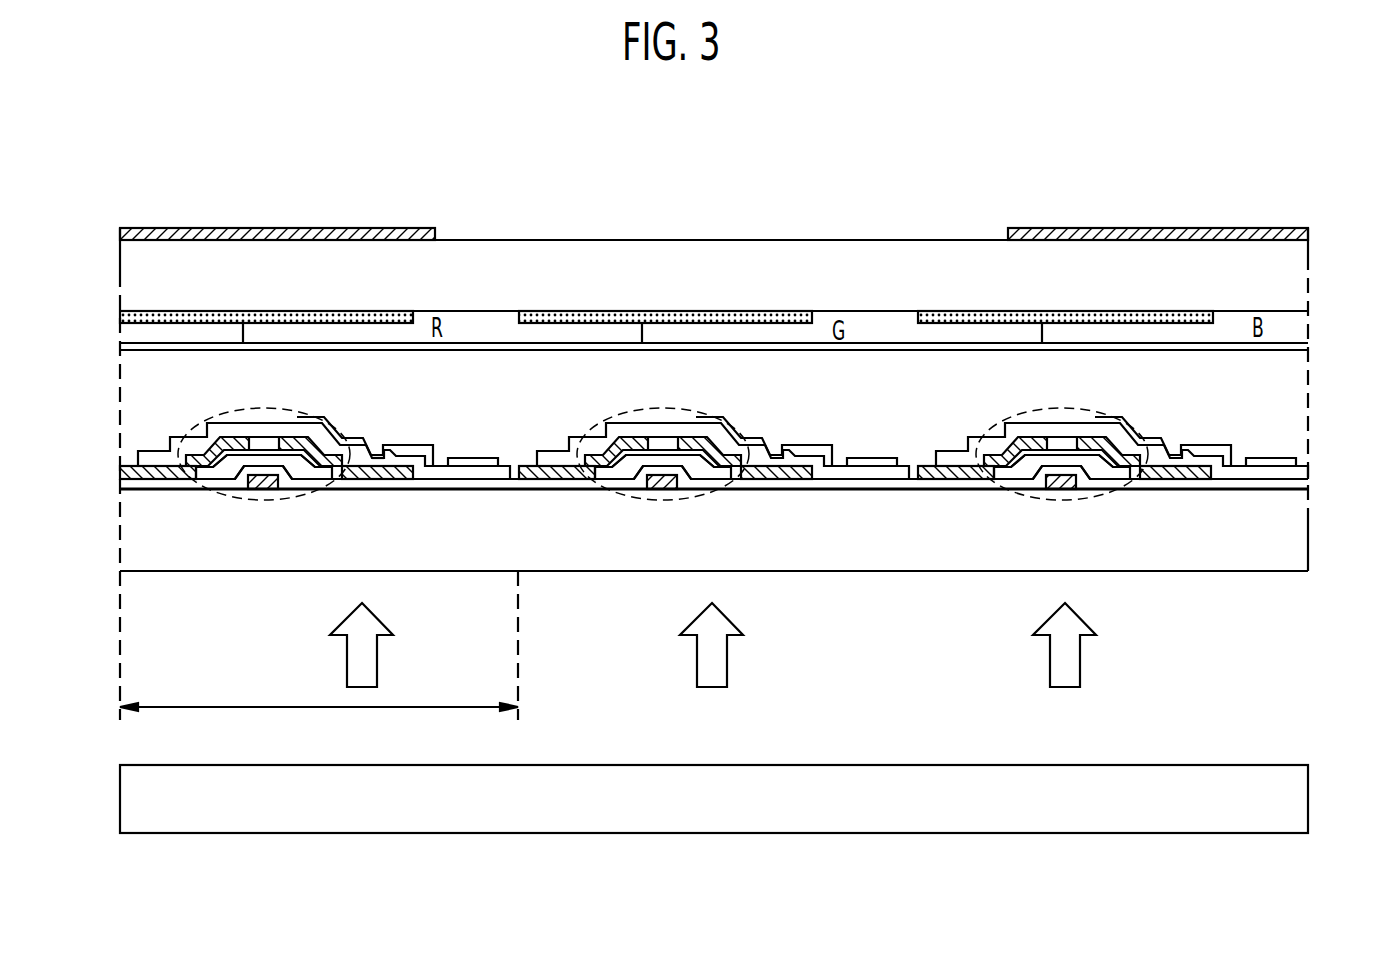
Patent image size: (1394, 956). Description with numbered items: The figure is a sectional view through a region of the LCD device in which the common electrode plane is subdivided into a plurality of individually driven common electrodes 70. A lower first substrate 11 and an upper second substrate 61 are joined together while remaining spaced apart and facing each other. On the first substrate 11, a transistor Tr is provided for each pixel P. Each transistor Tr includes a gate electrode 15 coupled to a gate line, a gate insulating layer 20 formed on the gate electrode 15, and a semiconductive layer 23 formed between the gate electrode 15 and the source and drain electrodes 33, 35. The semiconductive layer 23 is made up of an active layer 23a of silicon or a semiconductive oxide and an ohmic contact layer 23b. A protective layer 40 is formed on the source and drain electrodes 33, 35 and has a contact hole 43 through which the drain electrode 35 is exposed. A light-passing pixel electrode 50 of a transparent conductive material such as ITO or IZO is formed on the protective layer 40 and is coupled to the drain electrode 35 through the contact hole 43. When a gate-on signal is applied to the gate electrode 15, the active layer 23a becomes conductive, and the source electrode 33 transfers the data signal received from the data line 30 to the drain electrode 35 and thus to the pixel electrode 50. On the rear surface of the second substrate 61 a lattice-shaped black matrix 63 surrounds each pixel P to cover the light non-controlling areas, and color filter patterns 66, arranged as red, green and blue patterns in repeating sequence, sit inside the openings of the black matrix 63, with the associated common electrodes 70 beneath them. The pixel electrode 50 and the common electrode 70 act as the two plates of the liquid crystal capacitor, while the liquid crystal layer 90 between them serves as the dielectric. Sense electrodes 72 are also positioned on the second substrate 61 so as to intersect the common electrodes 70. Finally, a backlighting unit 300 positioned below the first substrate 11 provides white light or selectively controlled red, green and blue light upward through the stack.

The first substrate 11 is at (1292, 537).
The gate electrode 15 is at (264, 484).
The gate insulating layer 20 is at (438, 484).
The semiconductive layer 23 is at (651, 572).
The active layer 23a is at (205, 472).
The ohmic contact layer 23b is at (228, 462).
The data line 30 is at (139, 472).
The source electrode 33 is at (230, 445).
The drain electrode 35 is at (293, 447).
The protective layer 40 is at (442, 470).
The contact hole 43 is at (381, 450).
The pixel electrode 50 is at (498, 460).
The second substrate 61 is at (1291, 278).
The black matrix 63 is at (270, 311).
The color filter pattern 66 is at (875, 323).
The common electrode 70 is at (1295, 347).
The sense electrode 72 is at (1290, 232).
The liquid crystal layer 90 is at (1291, 380).
The backlighting unit 300 is at (1297, 800).
The transistor Tr is at (200, 427).
The pixel P is at (319, 721).